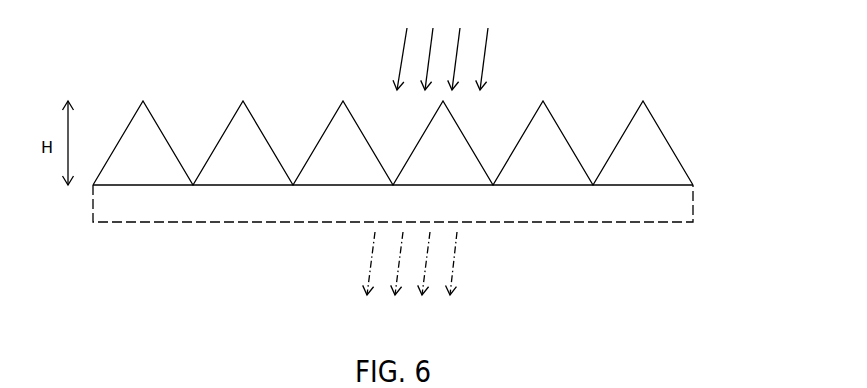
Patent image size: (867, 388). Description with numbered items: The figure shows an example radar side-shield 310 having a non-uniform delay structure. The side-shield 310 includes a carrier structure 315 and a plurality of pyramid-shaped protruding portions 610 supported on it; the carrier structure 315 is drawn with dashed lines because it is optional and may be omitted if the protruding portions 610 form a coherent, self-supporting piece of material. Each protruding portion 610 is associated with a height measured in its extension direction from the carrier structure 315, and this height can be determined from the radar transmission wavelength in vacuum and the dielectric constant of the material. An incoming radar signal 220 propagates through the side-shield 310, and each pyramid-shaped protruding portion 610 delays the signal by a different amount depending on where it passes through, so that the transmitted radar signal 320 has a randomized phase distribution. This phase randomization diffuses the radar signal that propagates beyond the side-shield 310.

The radar signal 220 is at (442, 45).
The side-shield 310 is at (424, 133).
The carrier structure 315 is at (259, 214).
The radar signal 320 is at (412, 285).
The pyramid-shaped protruding portion 610 is at (335, 140).